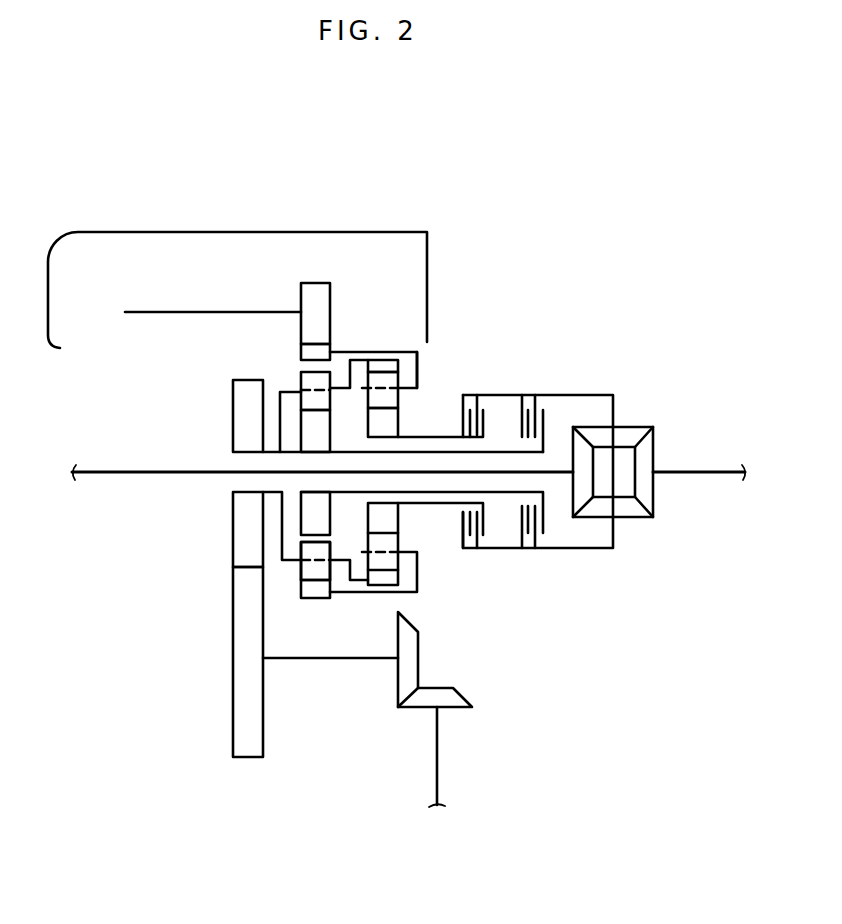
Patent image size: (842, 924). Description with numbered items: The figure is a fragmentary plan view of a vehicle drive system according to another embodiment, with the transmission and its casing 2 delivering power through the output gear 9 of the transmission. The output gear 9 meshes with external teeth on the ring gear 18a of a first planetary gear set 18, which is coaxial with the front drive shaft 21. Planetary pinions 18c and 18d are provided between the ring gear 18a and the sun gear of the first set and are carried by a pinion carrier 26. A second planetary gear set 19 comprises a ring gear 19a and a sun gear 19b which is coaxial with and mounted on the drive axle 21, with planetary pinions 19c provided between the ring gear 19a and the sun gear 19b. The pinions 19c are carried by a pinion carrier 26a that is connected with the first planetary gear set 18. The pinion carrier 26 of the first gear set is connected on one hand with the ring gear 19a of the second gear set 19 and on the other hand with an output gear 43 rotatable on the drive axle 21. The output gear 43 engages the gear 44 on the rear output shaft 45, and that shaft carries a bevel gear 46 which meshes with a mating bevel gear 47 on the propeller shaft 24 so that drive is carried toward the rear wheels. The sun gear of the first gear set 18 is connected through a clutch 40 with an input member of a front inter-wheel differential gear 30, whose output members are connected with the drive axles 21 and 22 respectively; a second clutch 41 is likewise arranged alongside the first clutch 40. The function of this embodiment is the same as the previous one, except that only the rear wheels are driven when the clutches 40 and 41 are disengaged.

The engine 2 is at (325, 230).
The output gear of the transmission 9 is at (325, 295).
The first planetary gear set 18 is at (320, 602).
The ring gear 18a is at (302, 352).
The planetary pinion 18c is at (307, 568).
The planetary pinion 18d is at (305, 377).
The second planetary gear set 19 is at (387, 590).
The ring gear 19a is at (387, 365).
The sun gear 19b is at (395, 423).
The planetary pinions 19c is at (393, 398).
The front drive axle 21 is at (128, 477).
The drive axle 22 is at (702, 475).
The propeller shaft 24 is at (440, 755).
The pinion carrier 26 is at (358, 358).
The pinion carrier 26a is at (420, 358).
The front inter-wheel differential gear 30 is at (647, 420).
The clutch 40 is at (487, 393).
The second clutch 41 is at (547, 393).
The output gear 43 is at (237, 520).
The gear 44 is at (240, 698).
The rear output shaft 45 is at (353, 660).
The bevel gear 46 is at (415, 638).
The bevel gear 47 is at (443, 693).